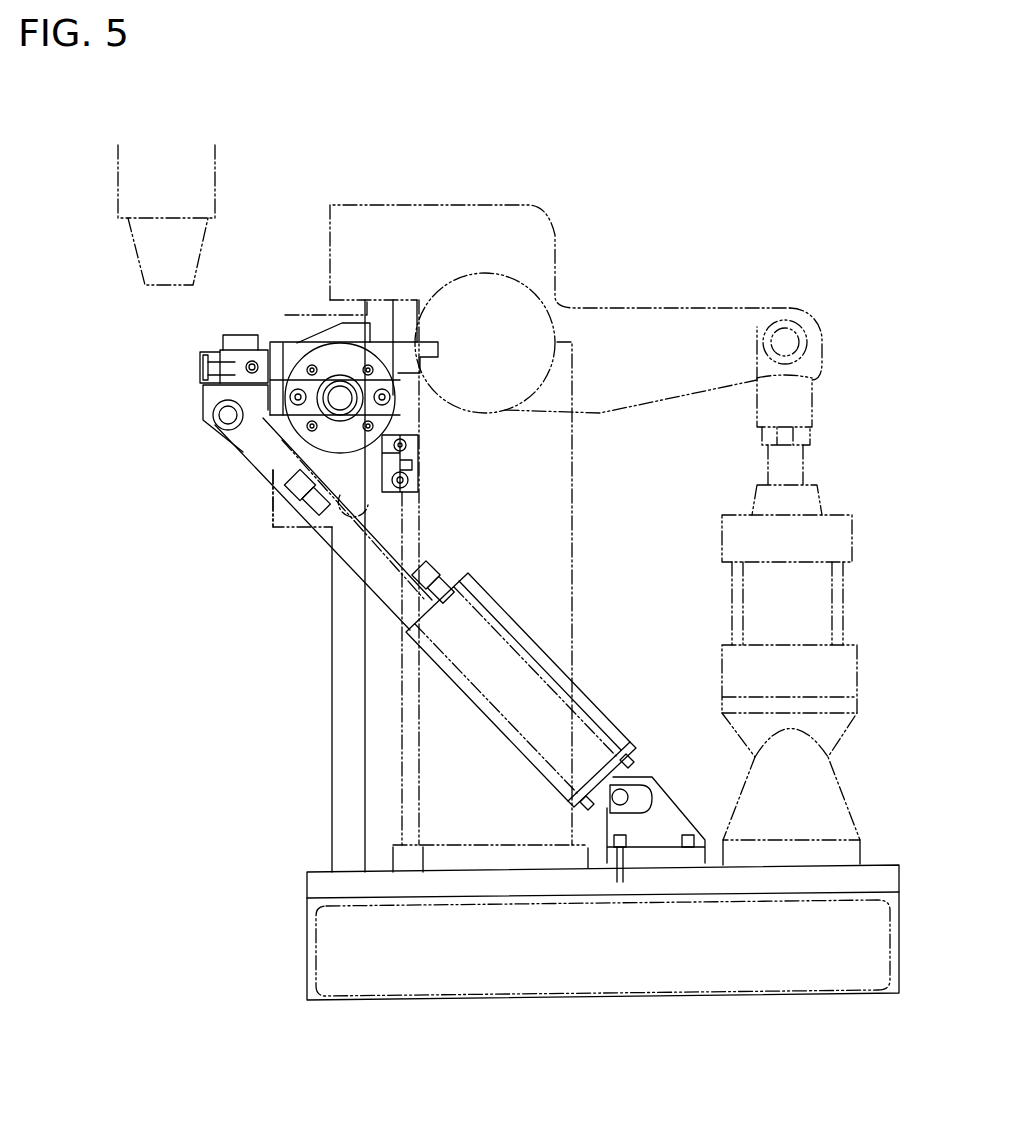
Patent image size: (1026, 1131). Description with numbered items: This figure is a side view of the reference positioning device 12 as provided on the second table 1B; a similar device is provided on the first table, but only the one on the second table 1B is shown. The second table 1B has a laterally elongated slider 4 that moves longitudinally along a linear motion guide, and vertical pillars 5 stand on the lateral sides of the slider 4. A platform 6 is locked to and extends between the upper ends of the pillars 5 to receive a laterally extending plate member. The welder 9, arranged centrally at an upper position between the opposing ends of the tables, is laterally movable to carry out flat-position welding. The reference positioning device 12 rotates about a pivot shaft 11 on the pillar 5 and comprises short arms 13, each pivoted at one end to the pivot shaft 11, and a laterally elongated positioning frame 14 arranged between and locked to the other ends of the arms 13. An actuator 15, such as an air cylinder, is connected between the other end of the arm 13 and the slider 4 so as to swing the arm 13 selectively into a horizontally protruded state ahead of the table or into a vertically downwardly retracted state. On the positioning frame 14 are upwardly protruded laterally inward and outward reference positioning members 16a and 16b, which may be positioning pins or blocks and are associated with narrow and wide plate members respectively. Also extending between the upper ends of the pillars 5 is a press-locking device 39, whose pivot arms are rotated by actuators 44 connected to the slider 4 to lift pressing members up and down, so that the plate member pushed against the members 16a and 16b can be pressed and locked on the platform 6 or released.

The second table 1B is at (566, 198).
The welder 9 is at (200, 178).
The press-locking device 39 is at (652, 303).
The actuator 44 is at (855, 540).
The slider 4 is at (320, 884).
The pillar 5 is at (330, 650).
The platform 6 is at (283, 360).
The pivot shaft 11 is at (340, 395).
The laterally inward reference positioning member 16a is at (236, 335).
The laterally outward reference positioning member 16b is at (268, 495).
The positioning frame 14 is at (205, 381).
The short arm 13 is at (206, 402).
The reference positioning device 12 is at (222, 458).
The actuator 15 is at (540, 682).